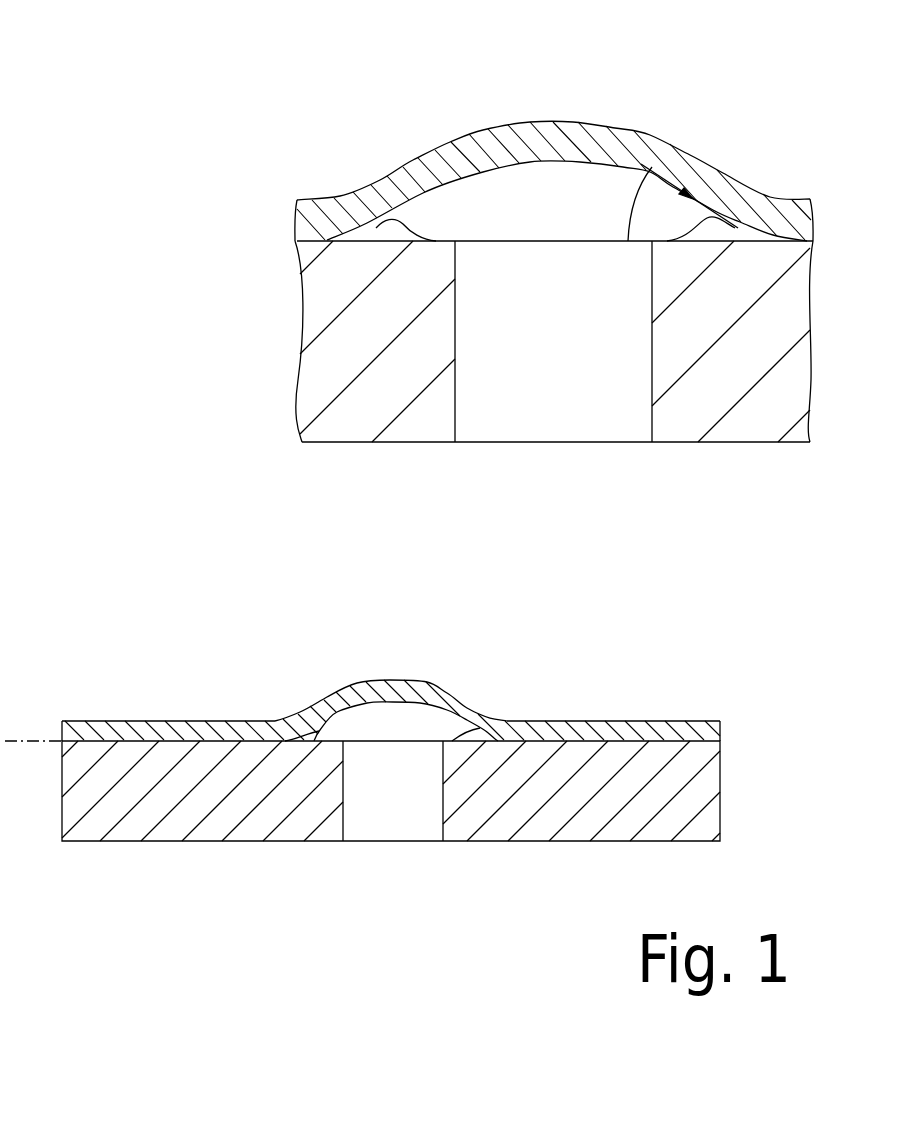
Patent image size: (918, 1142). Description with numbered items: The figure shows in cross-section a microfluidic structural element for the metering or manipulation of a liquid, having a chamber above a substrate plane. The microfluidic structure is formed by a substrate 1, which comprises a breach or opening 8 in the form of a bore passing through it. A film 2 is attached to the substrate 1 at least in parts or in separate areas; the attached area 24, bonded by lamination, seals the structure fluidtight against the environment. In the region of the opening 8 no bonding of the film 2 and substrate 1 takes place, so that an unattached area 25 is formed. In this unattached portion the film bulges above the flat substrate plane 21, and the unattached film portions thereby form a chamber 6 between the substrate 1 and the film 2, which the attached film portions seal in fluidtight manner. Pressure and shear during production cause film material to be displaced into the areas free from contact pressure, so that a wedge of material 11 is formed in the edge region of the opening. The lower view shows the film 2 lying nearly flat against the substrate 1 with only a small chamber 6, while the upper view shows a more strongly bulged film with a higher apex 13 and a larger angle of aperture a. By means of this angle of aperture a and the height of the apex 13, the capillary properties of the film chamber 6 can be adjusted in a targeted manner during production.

The substrate 1 is at (542, 805).
The film 2 is at (375, 692).
The chamber 6 is at (581, 213).
The opening 8 is at (566, 400).
The wedge of material 11 is at (392, 233).
The apex 13 is at (545, 105).
The substrate plane 21 is at (12, 722).
The attached area 24 is at (195, 738).
The unattached area 25 is at (450, 740).
The angle a is at (683, 202).